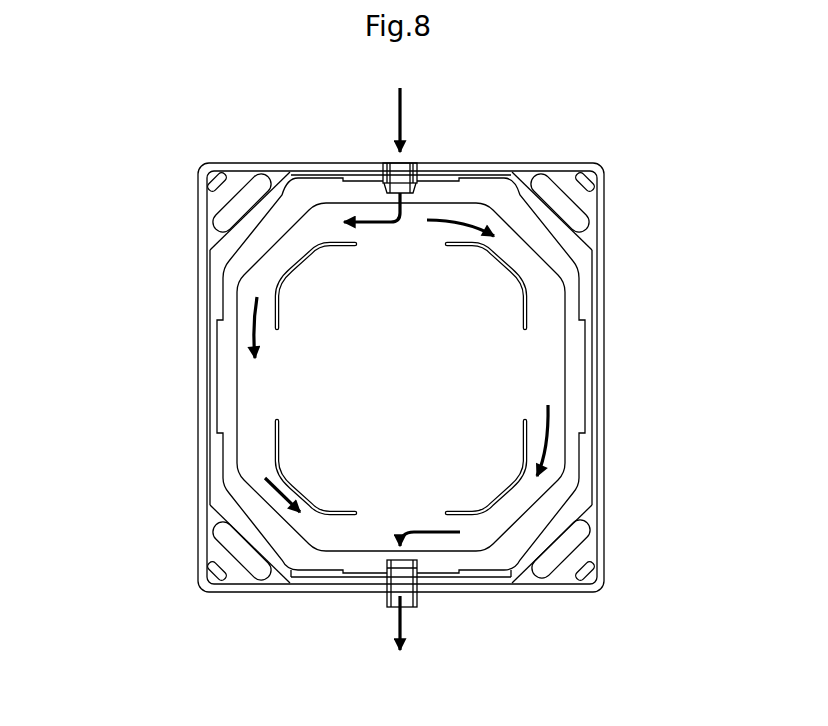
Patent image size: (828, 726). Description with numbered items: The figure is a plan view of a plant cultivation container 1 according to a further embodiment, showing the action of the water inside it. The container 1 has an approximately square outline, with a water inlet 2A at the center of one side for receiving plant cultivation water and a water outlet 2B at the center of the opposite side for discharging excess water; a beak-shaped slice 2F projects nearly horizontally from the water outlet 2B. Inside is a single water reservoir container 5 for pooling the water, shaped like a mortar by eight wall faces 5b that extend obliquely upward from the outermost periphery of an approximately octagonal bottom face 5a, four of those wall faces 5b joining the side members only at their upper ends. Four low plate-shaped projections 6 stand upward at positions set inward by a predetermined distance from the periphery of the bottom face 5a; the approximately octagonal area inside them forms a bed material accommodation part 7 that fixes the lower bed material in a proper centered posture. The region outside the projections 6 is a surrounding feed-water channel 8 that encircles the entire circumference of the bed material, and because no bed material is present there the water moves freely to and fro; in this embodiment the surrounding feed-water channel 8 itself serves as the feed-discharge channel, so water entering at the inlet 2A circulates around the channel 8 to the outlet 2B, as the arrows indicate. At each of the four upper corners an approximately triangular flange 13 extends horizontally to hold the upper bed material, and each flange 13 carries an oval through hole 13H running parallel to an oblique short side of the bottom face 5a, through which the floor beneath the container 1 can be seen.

The plant cultivation container 1 is at (152, 236).
The water reservoir container 5 is at (402, 341).
The bottom face 5a is at (498, 368).
The wall faces 5b is at (357, 192).
The water inlet 2A is at (408, 160).
The water outlet 2B is at (414, 606).
The beak-shaped slice 2F is at (387, 597).
The plate-shaped projections 6 is at (308, 259).
The bed material accommodation part 7 is at (387, 423).
The surrounding feed-water channel 8 is at (536, 316).
The flanges 13 is at (272, 180).
The through hole 13H is at (573, 226).